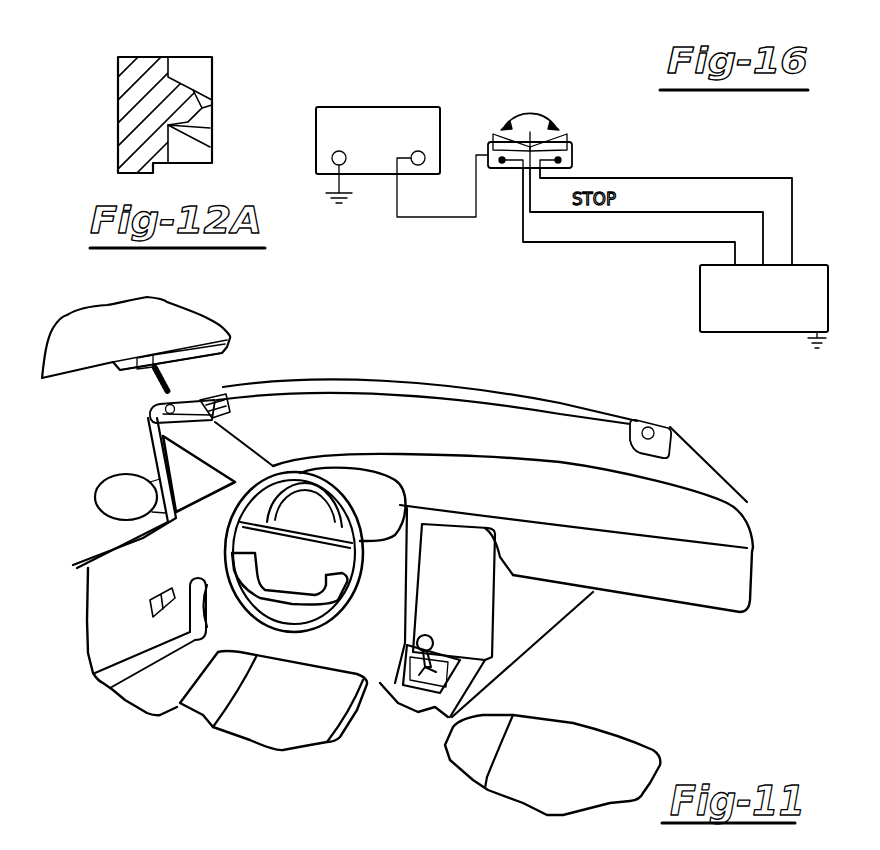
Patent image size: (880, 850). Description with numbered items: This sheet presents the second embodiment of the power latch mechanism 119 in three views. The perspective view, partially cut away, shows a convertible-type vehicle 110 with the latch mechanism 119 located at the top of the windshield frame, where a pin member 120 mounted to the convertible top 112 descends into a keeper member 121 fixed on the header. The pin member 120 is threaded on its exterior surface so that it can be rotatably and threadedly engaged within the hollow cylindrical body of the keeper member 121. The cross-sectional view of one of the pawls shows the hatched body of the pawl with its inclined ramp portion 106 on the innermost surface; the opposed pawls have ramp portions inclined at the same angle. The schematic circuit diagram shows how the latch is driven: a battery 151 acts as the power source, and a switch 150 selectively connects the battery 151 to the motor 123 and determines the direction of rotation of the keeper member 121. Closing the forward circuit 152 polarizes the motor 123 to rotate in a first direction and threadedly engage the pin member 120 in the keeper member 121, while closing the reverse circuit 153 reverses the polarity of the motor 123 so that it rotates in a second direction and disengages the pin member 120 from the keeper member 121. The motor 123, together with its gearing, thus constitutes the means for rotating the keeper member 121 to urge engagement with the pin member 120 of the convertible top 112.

In FIG. 12A, the inclined ramp portion 106 is at (195, 91).
In FIG. 11, the vehicle interior 110 is at (73, 530).
In FIG. 11, the convertible top 112 is at (125, 345).
In FIG. 11, the power latch mechanism 119 is at (197, 367).
In FIG. 11, the pin member 120 is at (152, 373).
In FIG. 11, the keeper member 121 is at (233, 395).
In FIG. 16, the motor 123 is at (728, 332).
In FIG. 16, the switch 150 is at (576, 139).
In FIG. 16, the battery 151 is at (388, 107).
In FIG. 16, the forward circuit 152 is at (626, 247).
In FIG. 16, the reverse circuit 153 is at (695, 173).